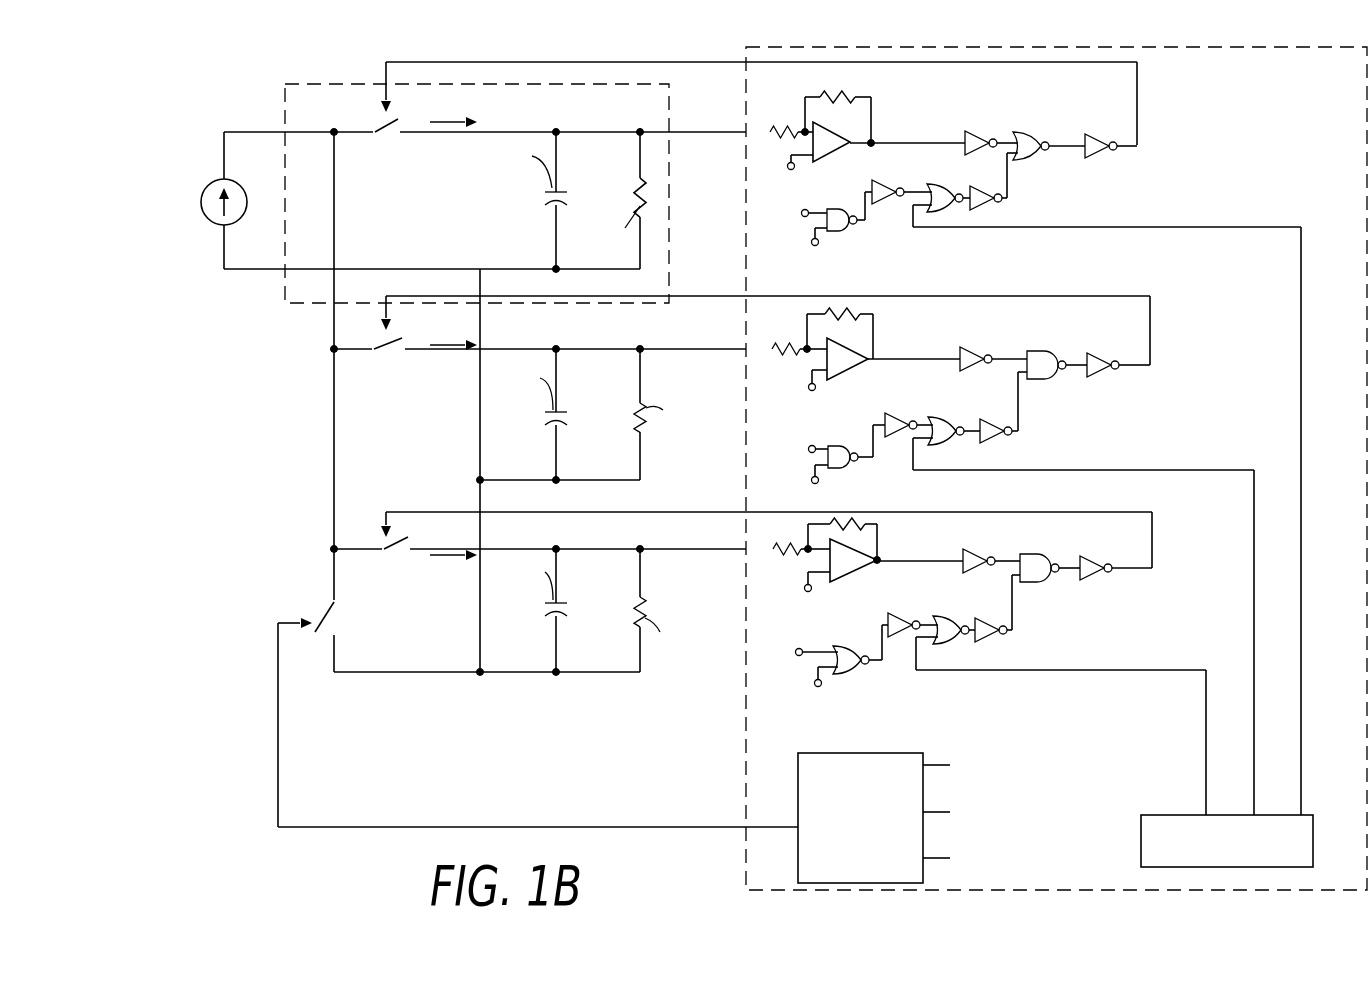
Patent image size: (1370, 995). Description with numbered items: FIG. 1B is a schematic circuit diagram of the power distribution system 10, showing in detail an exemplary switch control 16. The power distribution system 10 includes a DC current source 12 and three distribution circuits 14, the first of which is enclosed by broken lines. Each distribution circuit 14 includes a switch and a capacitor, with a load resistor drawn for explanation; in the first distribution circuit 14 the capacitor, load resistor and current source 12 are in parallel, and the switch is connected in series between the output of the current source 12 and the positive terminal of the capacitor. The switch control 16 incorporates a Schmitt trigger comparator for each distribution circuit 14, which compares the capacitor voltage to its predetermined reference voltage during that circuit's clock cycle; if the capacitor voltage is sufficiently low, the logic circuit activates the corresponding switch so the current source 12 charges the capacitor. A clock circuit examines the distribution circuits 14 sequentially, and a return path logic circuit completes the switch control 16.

The power distribution system 10 is at (272, 70).
The DC current source 12 is at (240, 218).
The distribution circuit 14 is at (669, 84).
The switch control 16 is at (765, 857).